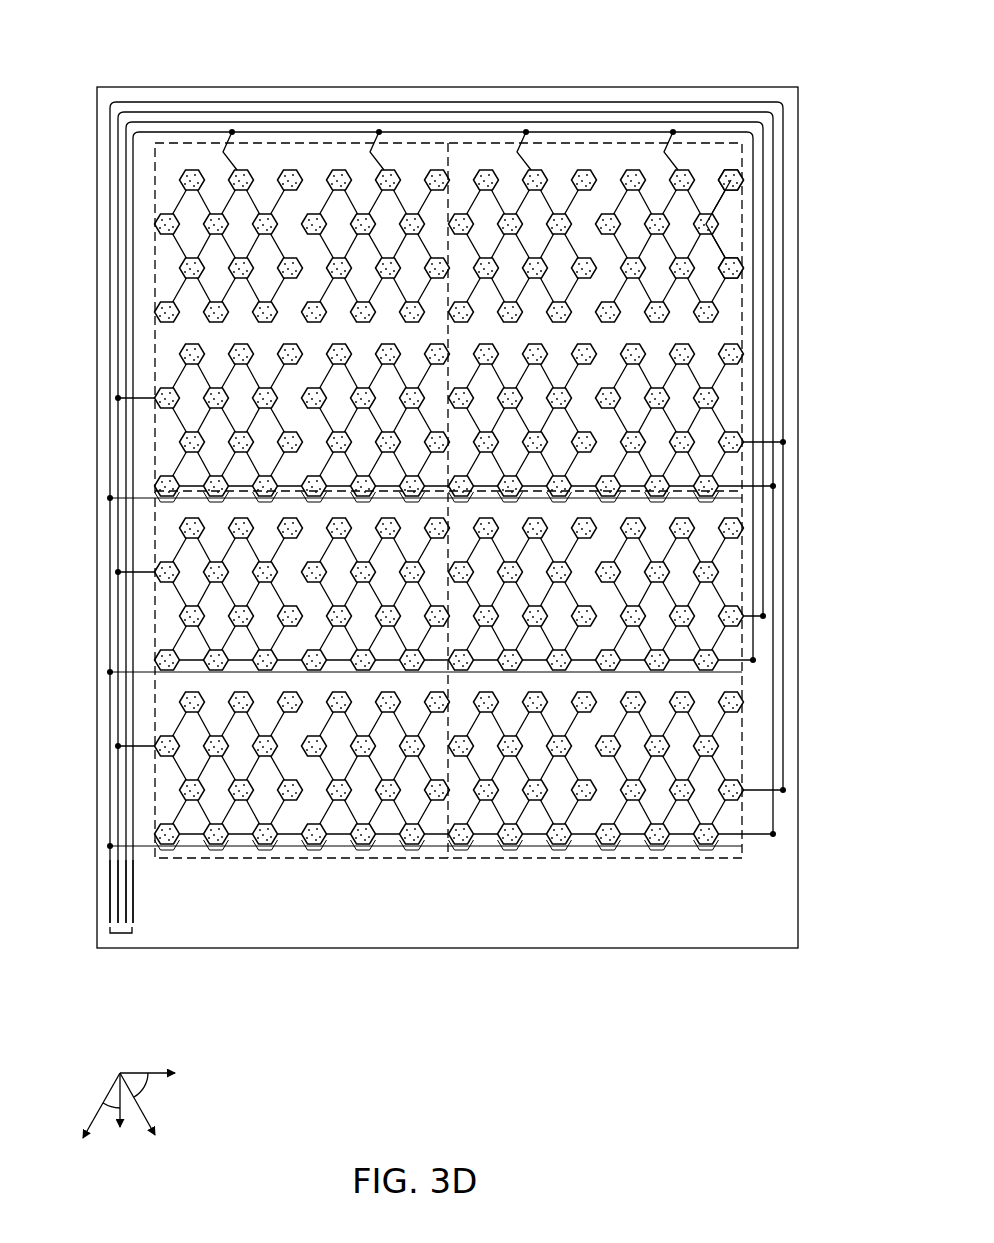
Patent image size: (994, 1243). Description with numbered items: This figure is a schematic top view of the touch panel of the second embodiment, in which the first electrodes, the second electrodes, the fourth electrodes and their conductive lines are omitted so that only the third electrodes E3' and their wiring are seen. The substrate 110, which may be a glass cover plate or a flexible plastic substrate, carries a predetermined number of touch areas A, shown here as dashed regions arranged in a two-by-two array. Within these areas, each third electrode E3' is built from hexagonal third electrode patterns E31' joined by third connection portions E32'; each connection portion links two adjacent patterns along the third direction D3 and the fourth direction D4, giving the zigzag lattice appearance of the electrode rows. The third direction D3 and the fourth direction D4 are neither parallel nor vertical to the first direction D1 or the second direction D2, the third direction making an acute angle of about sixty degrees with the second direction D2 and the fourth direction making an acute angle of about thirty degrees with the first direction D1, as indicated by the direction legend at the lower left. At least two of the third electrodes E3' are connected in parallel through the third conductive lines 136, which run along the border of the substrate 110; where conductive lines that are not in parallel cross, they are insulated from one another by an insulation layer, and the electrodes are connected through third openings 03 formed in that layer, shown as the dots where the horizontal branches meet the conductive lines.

The substrate 110 is at (153, 98).
The third openings 03 is at (114, 398).
The touch areas A is at (742, 517).
The third electrode patterns E31' is at (750, 118).
The third connection portions E32' is at (777, 157).
The third electrodes E3' is at (782, 139).
The third conductive lines 136 is at (121, 934).
The first direction D1 is at (118, 1114).
The second direction D2 is at (165, 1078).
The third direction D3 is at (150, 1120).
The fourth direction D4 is at (91, 1120).